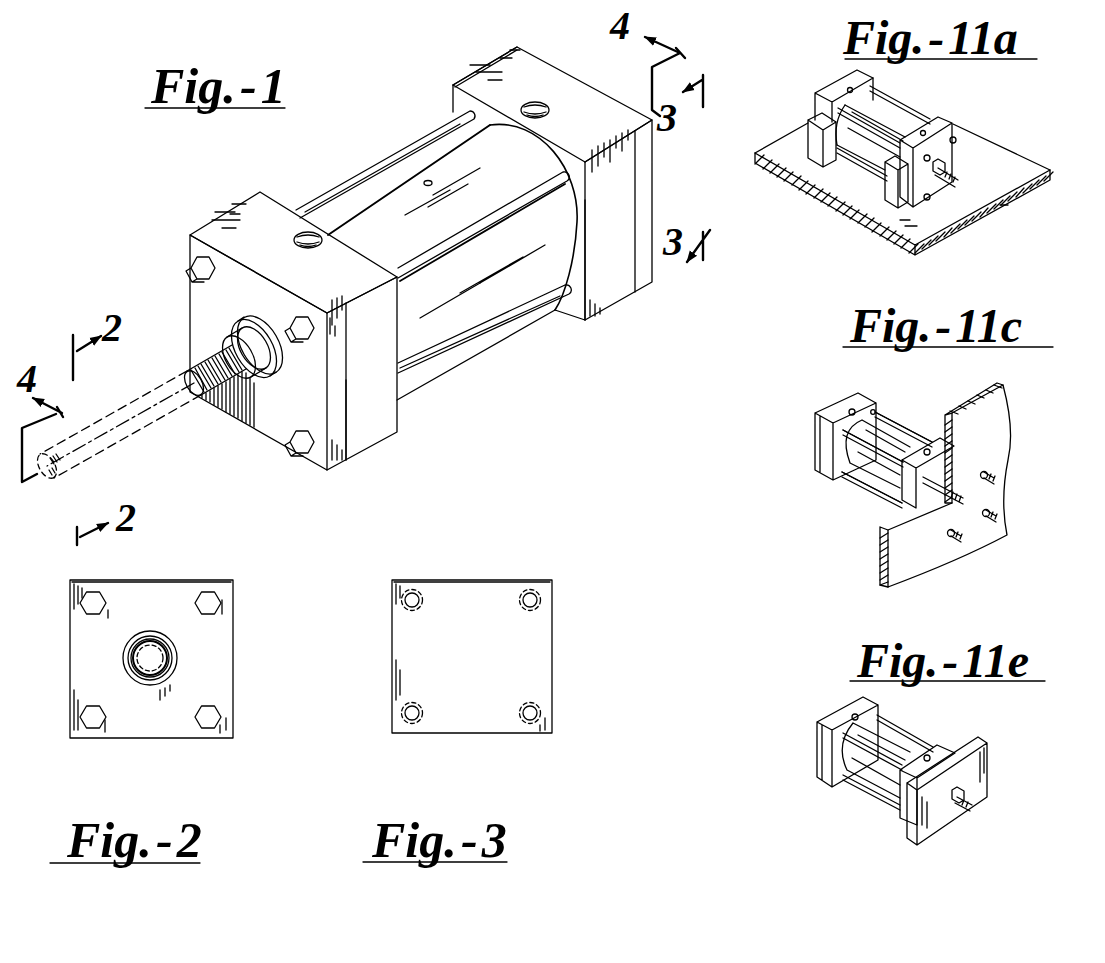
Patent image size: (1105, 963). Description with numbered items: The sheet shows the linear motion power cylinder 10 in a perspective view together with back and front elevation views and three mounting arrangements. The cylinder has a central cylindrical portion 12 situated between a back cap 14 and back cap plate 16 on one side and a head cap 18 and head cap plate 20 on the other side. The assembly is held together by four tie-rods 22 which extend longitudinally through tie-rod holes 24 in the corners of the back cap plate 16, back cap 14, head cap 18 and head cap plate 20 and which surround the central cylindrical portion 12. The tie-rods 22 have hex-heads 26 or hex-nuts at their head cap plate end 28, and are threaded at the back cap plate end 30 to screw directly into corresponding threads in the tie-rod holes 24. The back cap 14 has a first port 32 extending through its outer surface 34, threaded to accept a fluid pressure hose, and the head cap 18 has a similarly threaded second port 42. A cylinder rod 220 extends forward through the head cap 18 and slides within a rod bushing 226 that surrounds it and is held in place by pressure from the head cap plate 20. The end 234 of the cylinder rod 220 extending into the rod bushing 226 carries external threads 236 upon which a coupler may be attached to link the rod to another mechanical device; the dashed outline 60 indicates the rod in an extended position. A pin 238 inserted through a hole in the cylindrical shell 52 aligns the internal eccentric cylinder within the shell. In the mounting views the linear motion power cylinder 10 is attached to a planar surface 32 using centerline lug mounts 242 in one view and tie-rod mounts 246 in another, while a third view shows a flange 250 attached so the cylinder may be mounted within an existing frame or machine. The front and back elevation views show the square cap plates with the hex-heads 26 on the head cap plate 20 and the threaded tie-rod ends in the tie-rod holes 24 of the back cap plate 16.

In FIG. 1, the linear motion power cylinder 10 is at (215, 198).
In FIG. 11A, the linear motion power cylinder 10 is at (803, 94).
In FIG. 11C, the linear motion power cylinder 10 is at (846, 386).
In FIG. 11E, the linear motion power cylinder 10 is at (838, 696).
In FIG. 1, the central cylindrical portion 12 is at (407, 183).
In FIG. 1, the back cap 14 is at (590, 320).
In FIG. 1, the back cap plate 16 is at (638, 292).
In FIG. 3, the back cap plate 16 is at (490, 582).
In FIG. 1, the head cap 18 is at (383, 440).
In FIG. 1, the head cap plate 20 is at (337, 468).
In FIG. 2, the head cap plate 20 is at (233, 602).
In FIG. 1, the tie-rods 22 is at (353, 175).
In FIG. 3, the tie-rods 22 is at (415, 595).
In FIG. 11C, the tie-rods 22 is at (902, 426).
In FIG. 3, the tie-rod holes 24 is at (537, 598).
In FIG. 1, the hex-heads 26 is at (188, 266).
In FIG. 2, the hex-heads 26 is at (193, 602).
In FIG. 1, the head cap plate end 28 is at (313, 401).
In FIG. 2, the head cap plate end 28 is at (108, 661).
In FIG. 1, the back cap plate end 30 is at (580, 78).
In FIG. 3, the back cap plate end 30 is at (487, 674).
In FIG. 1, the first port 32 is at (528, 103).
In FIG. 11A, the first port 32 is at (1008, 157).
In FIG. 11C, the first port 32 is at (993, 428).
In FIG. 1, the outer surface 34 is at (460, 73).
In FIG. 1, the second port 42 is at (303, 232).
In FIG. 1, the cylindrical shell 52 is at (417, 323).
In FIG. 1, the extended piston rod position 60 is at (37, 477).
In FIG. 1, the cylinder rod 220 is at (238, 324).
In FIG. 2, the cylinder rod 220 is at (177, 657).
In FIG. 1, the rod bushing 226 is at (272, 377).
In FIG. 2, the rod bushing 226 is at (176, 670).
In FIG. 1, the end of the cylinder rod 234 is at (190, 372).
In FIG. 2, the end of the cylinder rod 234 is at (130, 663).
In FIG. 1, the external threads 236 is at (220, 393).
In FIG. 2, the external threads 236 is at (160, 655).
In FIG. 1, the pin 238 is at (433, 183).
In FIG. 11A, the centerline lug mounts 242 is at (883, 190).
In FIG. 11C, the tie-rod mounts 246 is at (990, 475).
In FIG. 11E, the flange 250 is at (985, 772).